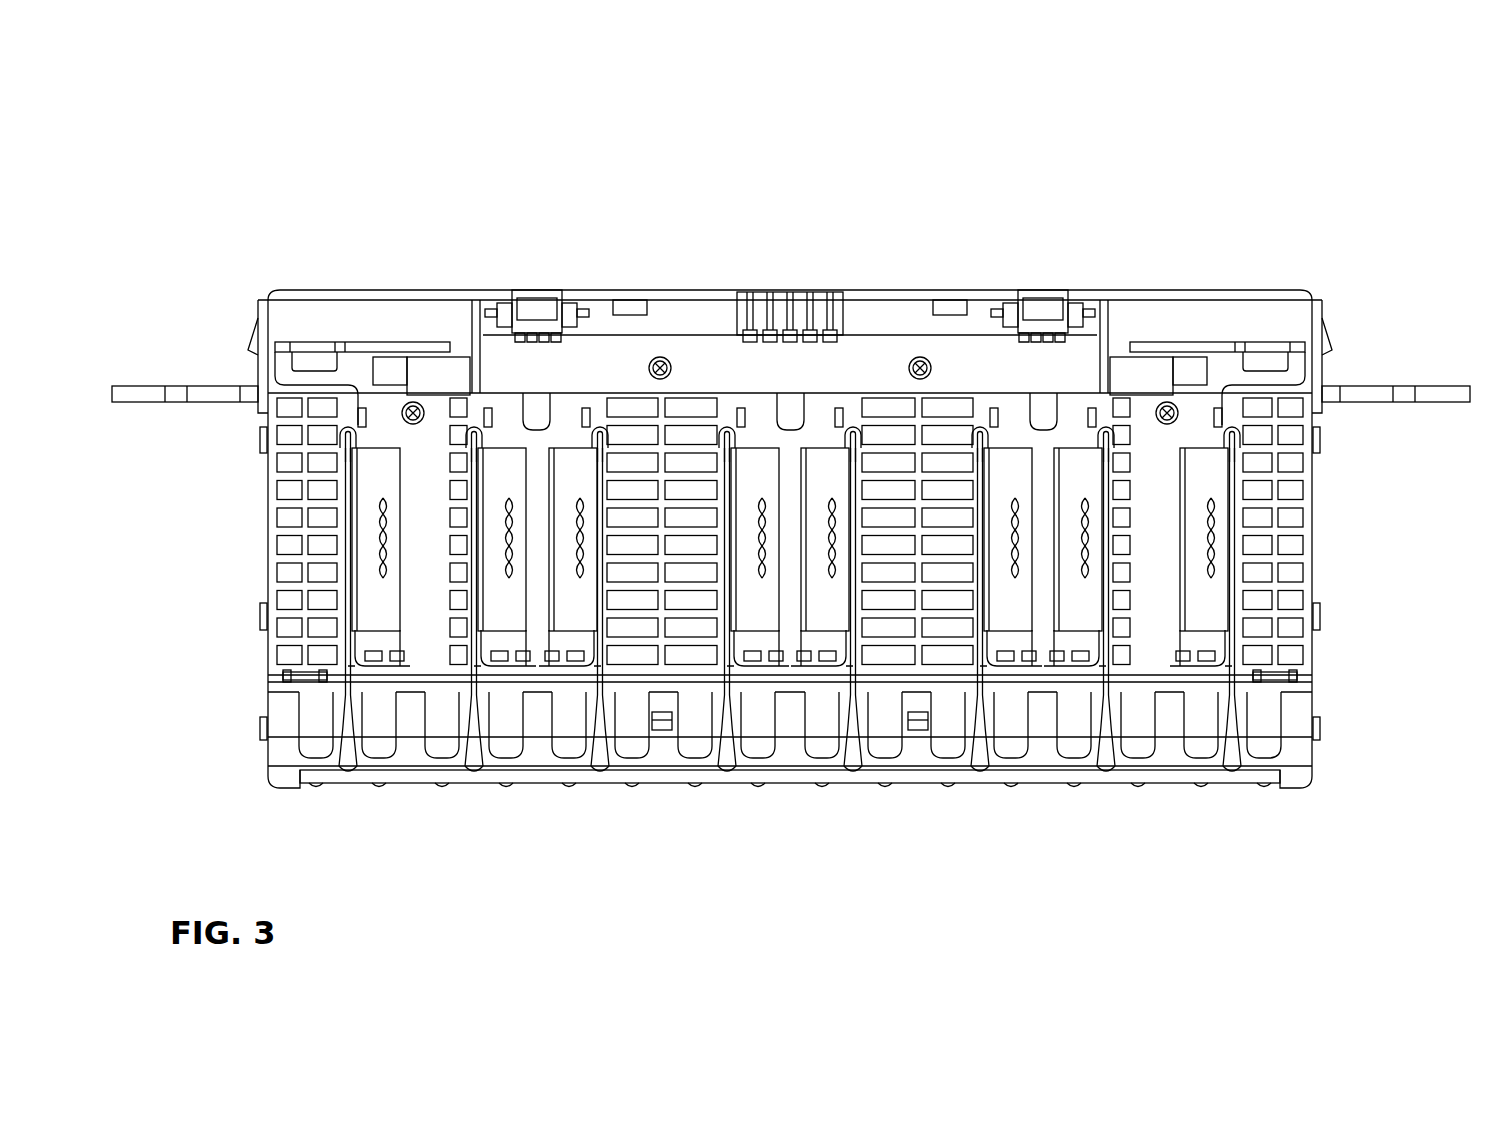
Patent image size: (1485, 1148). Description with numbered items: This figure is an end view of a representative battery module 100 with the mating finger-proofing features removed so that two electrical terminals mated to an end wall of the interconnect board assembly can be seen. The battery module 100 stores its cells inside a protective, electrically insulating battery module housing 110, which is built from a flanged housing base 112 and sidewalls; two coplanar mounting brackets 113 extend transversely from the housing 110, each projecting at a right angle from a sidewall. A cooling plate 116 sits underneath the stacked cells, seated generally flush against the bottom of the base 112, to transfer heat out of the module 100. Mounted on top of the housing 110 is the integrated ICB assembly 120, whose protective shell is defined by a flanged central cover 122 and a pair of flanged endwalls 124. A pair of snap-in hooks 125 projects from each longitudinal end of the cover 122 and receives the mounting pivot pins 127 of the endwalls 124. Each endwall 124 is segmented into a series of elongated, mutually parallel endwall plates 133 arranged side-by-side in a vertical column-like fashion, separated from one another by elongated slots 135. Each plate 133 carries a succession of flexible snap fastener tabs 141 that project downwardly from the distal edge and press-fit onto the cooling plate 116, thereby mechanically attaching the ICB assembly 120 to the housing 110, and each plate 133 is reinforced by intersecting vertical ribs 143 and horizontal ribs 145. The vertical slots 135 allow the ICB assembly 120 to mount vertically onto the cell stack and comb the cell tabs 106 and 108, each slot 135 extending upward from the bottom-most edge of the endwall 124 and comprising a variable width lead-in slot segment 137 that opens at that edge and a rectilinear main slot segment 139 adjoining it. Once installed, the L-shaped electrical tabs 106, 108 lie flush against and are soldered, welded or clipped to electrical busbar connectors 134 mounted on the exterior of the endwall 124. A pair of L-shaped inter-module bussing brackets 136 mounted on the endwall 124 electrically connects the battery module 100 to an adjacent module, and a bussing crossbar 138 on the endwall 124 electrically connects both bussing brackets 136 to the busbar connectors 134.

The battery module 100 is at (226, 95).
The cell tab 106 is at (392, 447).
The cell tab 108 is at (481, 395).
The battery module housing 110 is at (1308, 895).
The housing base 112 is at (1300, 778).
The mounting bracket 113 is at (142, 386).
The cooling plate 116 is at (285, 785).
The integrated interconnect board (ICB) assembly 120 is at (222, 550).
The central cover 122 is at (925, 290).
The endwall 124 is at (1312, 295).
The snap-in hook 125 is at (540, 320).
The mounting pivot pin 127 is at (498, 310).
The endwall plate 133 is at (415, 683).
The electrical busbar connector 134 is at (507, 638).
The elongated slot 135 is at (349, 432).
The inter-module bussing bracket 136 is at (375, 638).
The lead-in slot segment 137 is at (349, 772).
The bussing crossbar 138 is at (887, 367).
The main slot segment 139 is at (333, 758).
The snap fastener tab 141 is at (385, 768).
The vertical rib 143 is at (700, 337).
The horizontal rib 145 is at (740, 335).